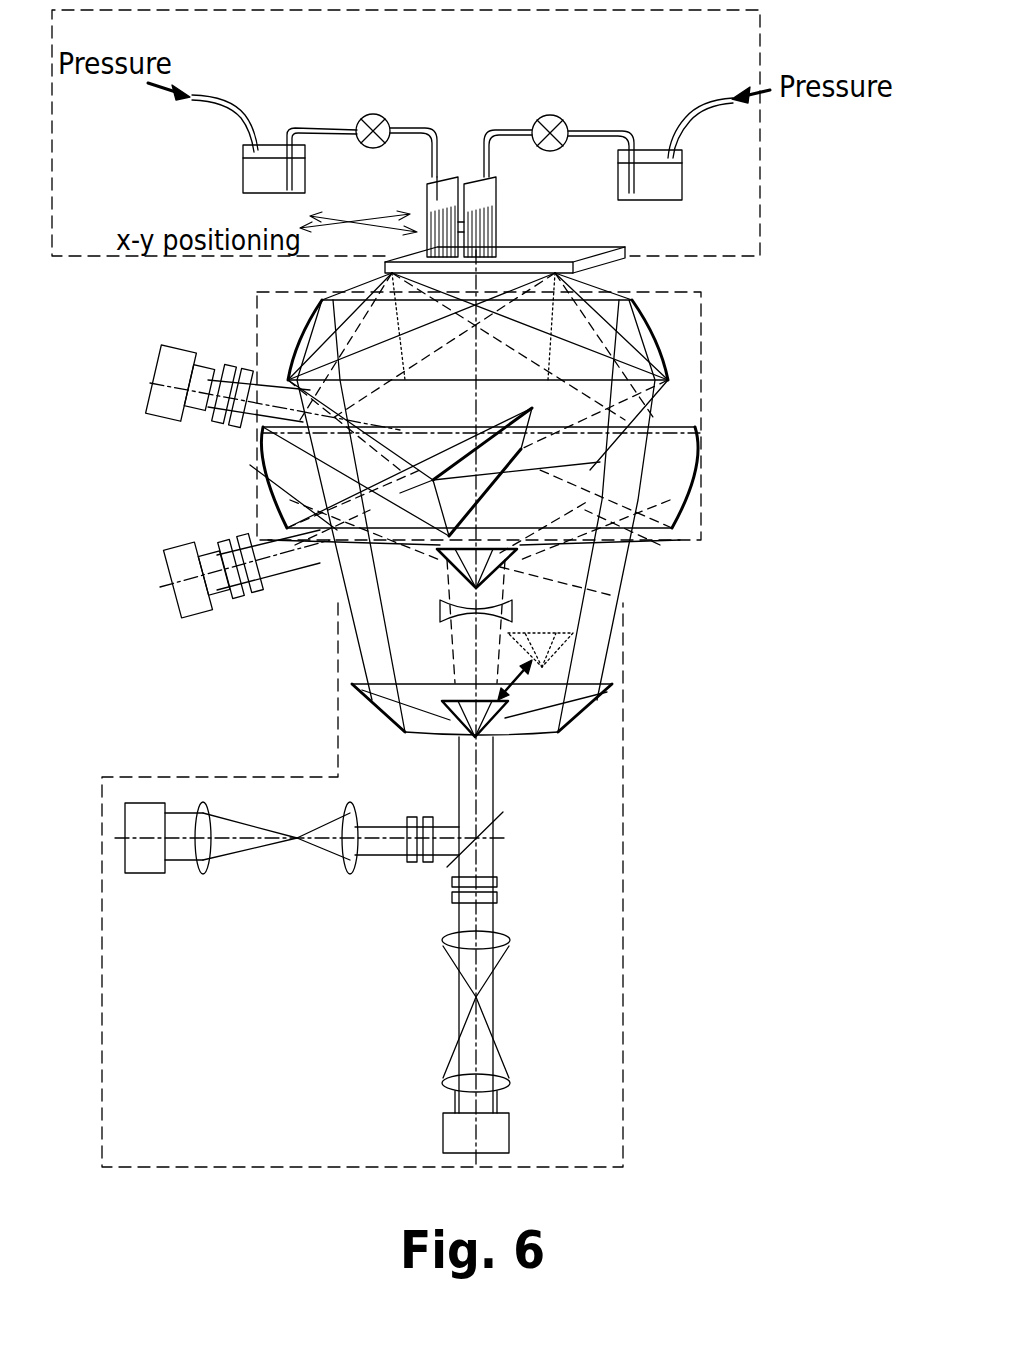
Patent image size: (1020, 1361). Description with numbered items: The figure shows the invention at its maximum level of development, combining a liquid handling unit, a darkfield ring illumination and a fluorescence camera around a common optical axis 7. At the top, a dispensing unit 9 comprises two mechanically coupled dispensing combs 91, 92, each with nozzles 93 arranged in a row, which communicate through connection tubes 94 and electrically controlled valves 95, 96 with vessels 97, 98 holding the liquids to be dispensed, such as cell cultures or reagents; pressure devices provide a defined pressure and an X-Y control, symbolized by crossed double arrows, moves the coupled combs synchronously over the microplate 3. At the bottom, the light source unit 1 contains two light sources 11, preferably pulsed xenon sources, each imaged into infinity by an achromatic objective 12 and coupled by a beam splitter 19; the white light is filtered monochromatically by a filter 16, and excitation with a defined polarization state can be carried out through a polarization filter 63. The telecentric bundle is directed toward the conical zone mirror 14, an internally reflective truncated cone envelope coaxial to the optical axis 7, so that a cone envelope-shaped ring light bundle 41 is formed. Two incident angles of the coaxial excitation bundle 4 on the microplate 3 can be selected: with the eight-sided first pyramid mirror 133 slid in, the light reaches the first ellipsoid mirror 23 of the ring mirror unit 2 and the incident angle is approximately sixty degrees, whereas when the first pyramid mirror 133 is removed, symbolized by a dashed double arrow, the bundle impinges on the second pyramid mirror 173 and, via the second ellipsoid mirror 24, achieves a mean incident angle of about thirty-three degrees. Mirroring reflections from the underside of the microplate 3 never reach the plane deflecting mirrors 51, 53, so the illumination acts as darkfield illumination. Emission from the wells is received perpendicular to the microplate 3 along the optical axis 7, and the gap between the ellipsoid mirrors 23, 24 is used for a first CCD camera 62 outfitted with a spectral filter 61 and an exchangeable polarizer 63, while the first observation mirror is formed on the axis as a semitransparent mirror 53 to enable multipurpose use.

The light source unit 1 is at (627, 1072).
The ring mirror unit 2 is at (680, 542).
The microplate 3 is at (593, 260).
The excitation bundle 4 is at (322, 300).
The optical axis 7 is at (430, 345).
The dispensing unit 9 is at (763, 63).
The light source 11 is at (463, 1132).
The achromatic objective 12 is at (352, 947).
The conical zone mirror 14 is at (610, 693).
The filter 16 is at (415, 862).
The beam splitter 19 is at (503, 818).
The first ellipsoid mirror 23 is at (653, 337).
The second ellipsoid mirror 24 is at (682, 513).
The ring light bundle 41 is at (425, 562).
The deflecting mirror 51 is at (620, 480).
The semitransparent mirror 53 is at (600, 431).
The spectral filter 61 is at (239, 485).
The CCD camera 62 is at (162, 395).
The polarization filter 63 is at (230, 430).
The first dispensing comb 91 is at (438, 190).
The second dispensing comb 92 is at (477, 187).
The nozzle 93 is at (490, 257).
The connection tube 94 is at (433, 128).
The first valve 95 is at (366, 113).
The second valve 96 is at (556, 122).
The first vessel 97 is at (260, 180).
The second vessel 98 is at (665, 178).
The first pyramid mirror 133 is at (543, 737).
The second pyramid mirror 173 is at (505, 567).